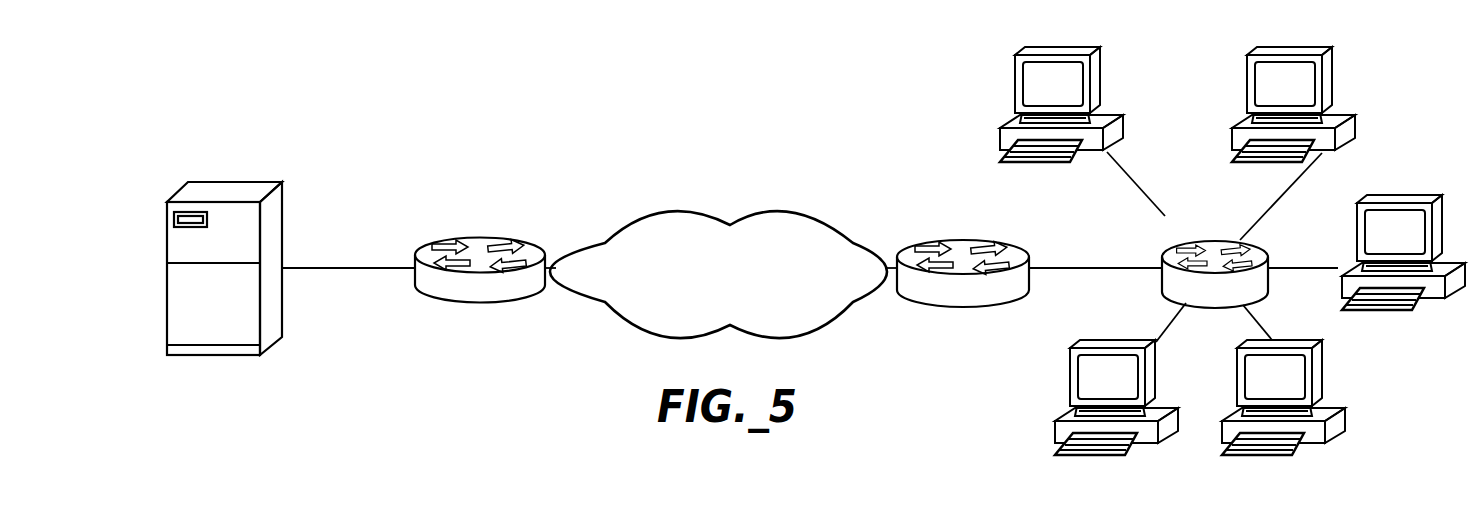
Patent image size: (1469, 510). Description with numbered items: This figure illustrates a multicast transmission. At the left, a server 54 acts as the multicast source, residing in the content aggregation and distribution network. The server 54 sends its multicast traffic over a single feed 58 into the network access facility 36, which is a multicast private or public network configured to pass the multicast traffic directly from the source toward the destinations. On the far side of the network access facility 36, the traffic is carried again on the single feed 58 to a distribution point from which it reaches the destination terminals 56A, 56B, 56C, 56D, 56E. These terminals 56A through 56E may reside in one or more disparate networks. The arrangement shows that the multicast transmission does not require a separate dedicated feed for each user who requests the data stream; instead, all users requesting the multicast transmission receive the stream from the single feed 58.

The server 54 is at (274, 228).
The single feed 58 is at (353, 270).
The network access facility 36 is at (703, 212).
The destination terminal 56A is at (1102, 93).
The destination terminal 56B is at (1334, 93).
The destination terminal 56C is at (1380, 195).
The destination terminal 56D is at (1322, 372).
The destination terminal 56E is at (1070, 372).